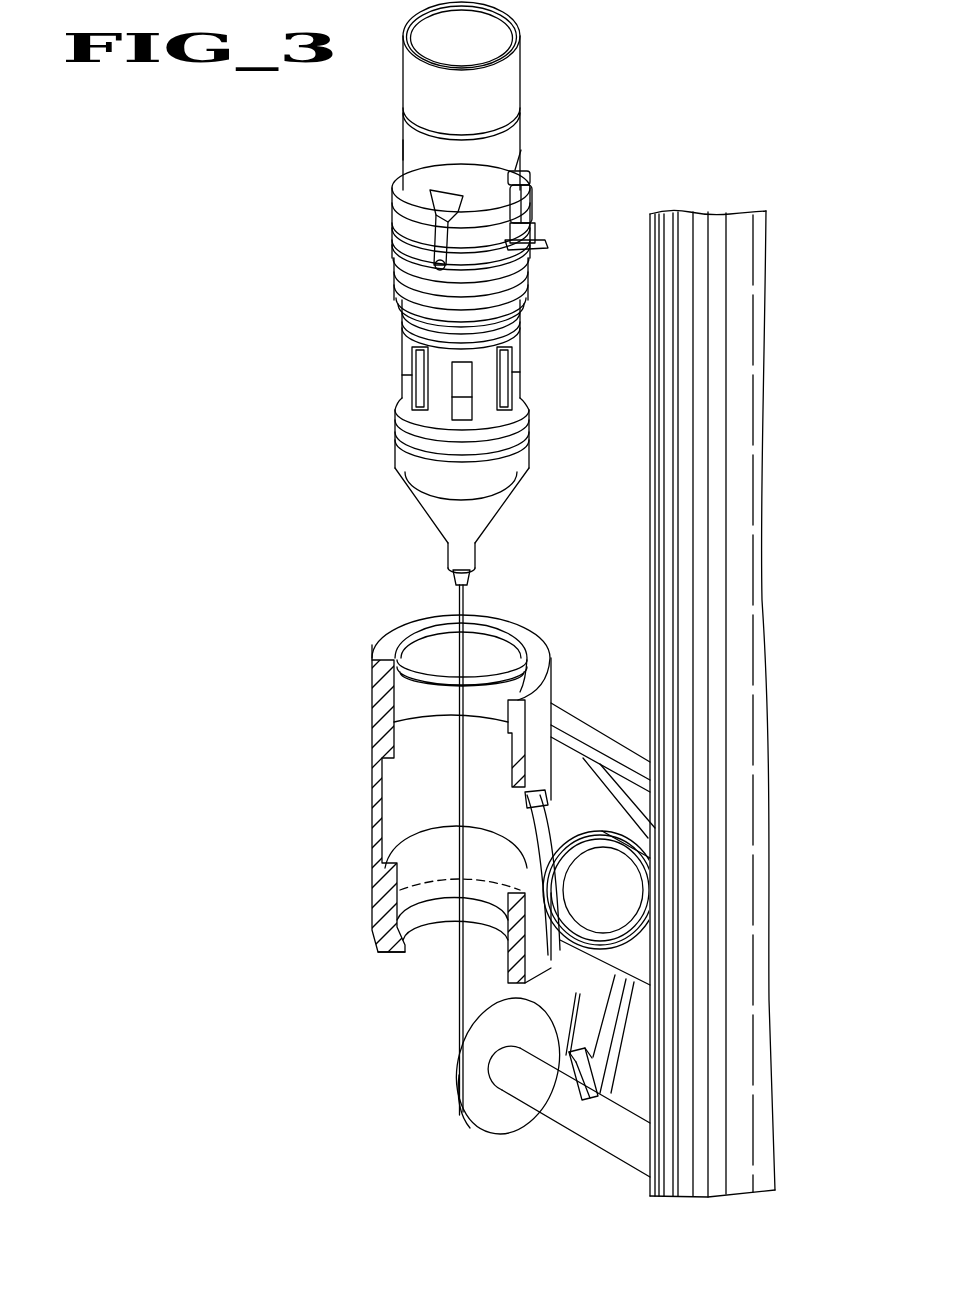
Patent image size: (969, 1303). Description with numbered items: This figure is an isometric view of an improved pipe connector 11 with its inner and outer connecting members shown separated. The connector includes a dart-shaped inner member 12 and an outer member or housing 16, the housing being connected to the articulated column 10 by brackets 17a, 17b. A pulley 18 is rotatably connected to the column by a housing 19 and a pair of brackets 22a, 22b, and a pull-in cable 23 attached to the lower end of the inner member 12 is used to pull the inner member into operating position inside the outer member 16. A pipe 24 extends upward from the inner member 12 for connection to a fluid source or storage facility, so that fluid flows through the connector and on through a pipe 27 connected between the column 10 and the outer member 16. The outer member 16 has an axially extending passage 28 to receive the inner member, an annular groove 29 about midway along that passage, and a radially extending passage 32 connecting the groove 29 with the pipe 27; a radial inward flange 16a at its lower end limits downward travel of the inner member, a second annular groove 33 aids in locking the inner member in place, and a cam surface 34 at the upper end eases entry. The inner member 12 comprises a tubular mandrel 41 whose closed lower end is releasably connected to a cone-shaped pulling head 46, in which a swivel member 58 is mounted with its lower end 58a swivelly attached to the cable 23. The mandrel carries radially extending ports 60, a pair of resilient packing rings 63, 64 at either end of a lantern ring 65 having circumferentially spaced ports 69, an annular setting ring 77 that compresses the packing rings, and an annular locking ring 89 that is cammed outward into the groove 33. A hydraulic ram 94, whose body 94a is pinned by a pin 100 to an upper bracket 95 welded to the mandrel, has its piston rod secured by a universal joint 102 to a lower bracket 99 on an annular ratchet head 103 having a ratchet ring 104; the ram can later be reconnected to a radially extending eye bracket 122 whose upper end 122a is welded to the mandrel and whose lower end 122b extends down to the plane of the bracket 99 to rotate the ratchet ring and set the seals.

The articulated column 10 is at (662, 520).
The pipe connector 11 is at (350, 513).
The inner member 12 is at (386, 405).
The outer member 16 is at (366, 831).
The radial inward flange 16a is at (385, 947).
The bracket 17a is at (575, 722).
The bracket 17b is at (612, 790).
The pulley 18 is at (488, 1130).
The housing 19 is at (573, 1124).
The bracket 22a is at (612, 973).
The bracket 22b is at (577, 1062).
The pull-in cable 23 is at (457, 1019).
The pipe 24 is at (516, 86).
The pipe 27 is at (625, 910).
The axially extending passage 28 is at (412, 720).
The annular groove 29 is at (396, 788).
The radially extending passage 32 is at (538, 835).
The second annular groove 33 is at (495, 660).
The cam surface 34 is at (395, 655).
The tubular mandrel 41 is at (406, 150).
The pulling head 46 is at (402, 455).
The swivel member 58 is at (447, 552).
The lower end of swivel member 58a is at (453, 578).
The ports 60 is at (498, 372).
The resilient packing ring 63 is at (530, 432).
The resilient packing ring 64 is at (416, 316).
The lantern ring 65 is at (408, 338).
The ports 69 is at (445, 372).
The setting ring 77 is at (510, 262).
The locking ring 89 is at (412, 288).
The hydraulic ram 94 is at (540, 190).
The body of hydraulic ram 94a is at (533, 210).
The upper bracket 95 is at (520, 172).
The lower bracket 99 is at (540, 246).
The pin 100 is at (528, 176).
The universal joint 102 is at (536, 232).
The ratchet head 103 is at (392, 218).
The ratchet ring 104 is at (393, 194).
The eye bracket 122 is at (420, 242).
The upper end of eye bracket 122a is at (444, 200).
The lower end of eye bracket 122b is at (430, 264).